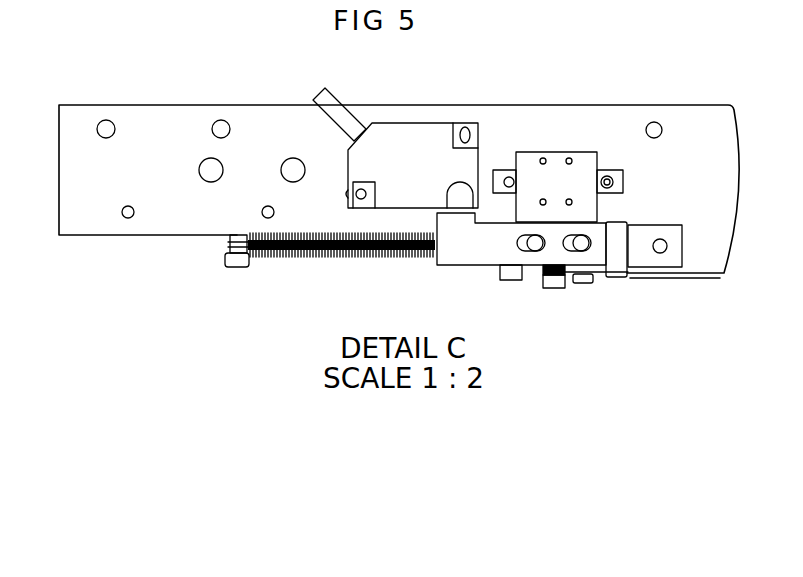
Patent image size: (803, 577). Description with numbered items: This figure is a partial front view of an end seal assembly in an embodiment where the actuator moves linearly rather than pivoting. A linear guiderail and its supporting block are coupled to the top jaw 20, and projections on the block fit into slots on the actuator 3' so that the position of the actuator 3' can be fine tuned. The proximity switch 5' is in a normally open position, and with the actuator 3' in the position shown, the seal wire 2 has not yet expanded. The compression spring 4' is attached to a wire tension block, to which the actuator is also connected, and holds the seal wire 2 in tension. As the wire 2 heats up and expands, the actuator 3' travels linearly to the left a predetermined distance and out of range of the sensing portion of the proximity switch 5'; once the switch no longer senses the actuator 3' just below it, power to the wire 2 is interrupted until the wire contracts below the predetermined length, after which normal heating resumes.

The top jaw 20 is at (687, 127).
The proximity switch 5' is at (395, 148).
The actuator 3' is at (559, 234).
The compression spring 4' is at (312, 353).
The seal wire 2 is at (608, 278).